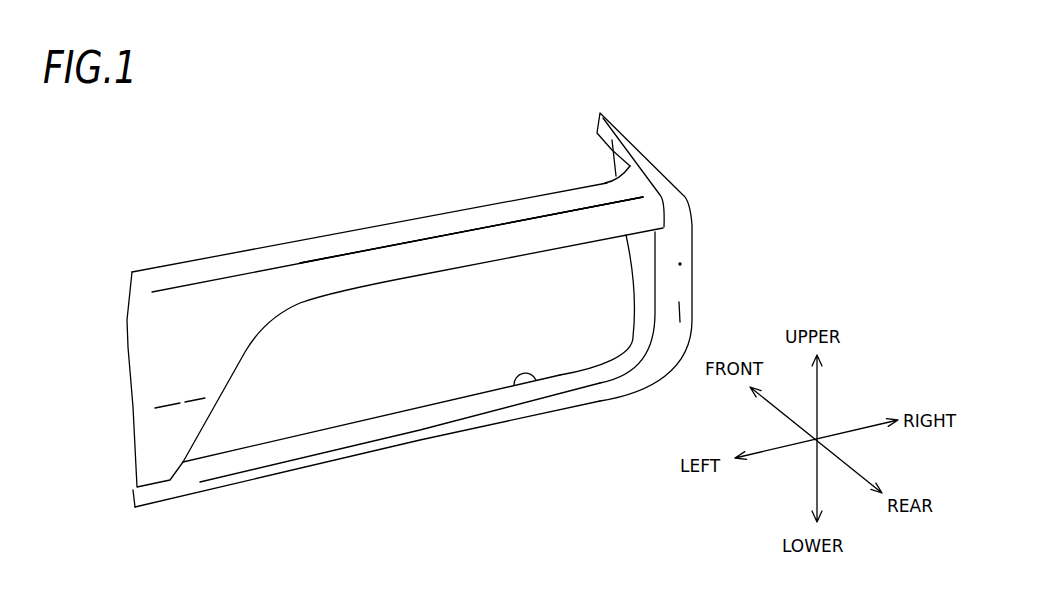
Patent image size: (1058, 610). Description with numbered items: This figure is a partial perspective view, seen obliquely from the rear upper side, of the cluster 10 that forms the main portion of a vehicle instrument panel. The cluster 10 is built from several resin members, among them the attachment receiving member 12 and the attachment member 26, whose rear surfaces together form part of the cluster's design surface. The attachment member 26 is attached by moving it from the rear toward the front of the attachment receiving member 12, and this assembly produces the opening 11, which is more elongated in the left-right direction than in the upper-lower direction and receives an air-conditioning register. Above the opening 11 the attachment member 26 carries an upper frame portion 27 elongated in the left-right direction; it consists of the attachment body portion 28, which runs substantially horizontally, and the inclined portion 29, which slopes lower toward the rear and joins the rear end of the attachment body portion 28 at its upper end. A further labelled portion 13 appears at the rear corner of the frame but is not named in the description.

The cluster 10 is at (113, 509).
The opening 11 is at (535, 380).
The attachment receiving member 12 is at (449, 444).
The rear pillar portion 13 is at (683, 266).
The attachment member 26 is at (262, 231).
The upper frame portion 27 is at (445, 170).
The attachment body portion 28 is at (380, 237).
The inclined portion 29 is at (433, 255).